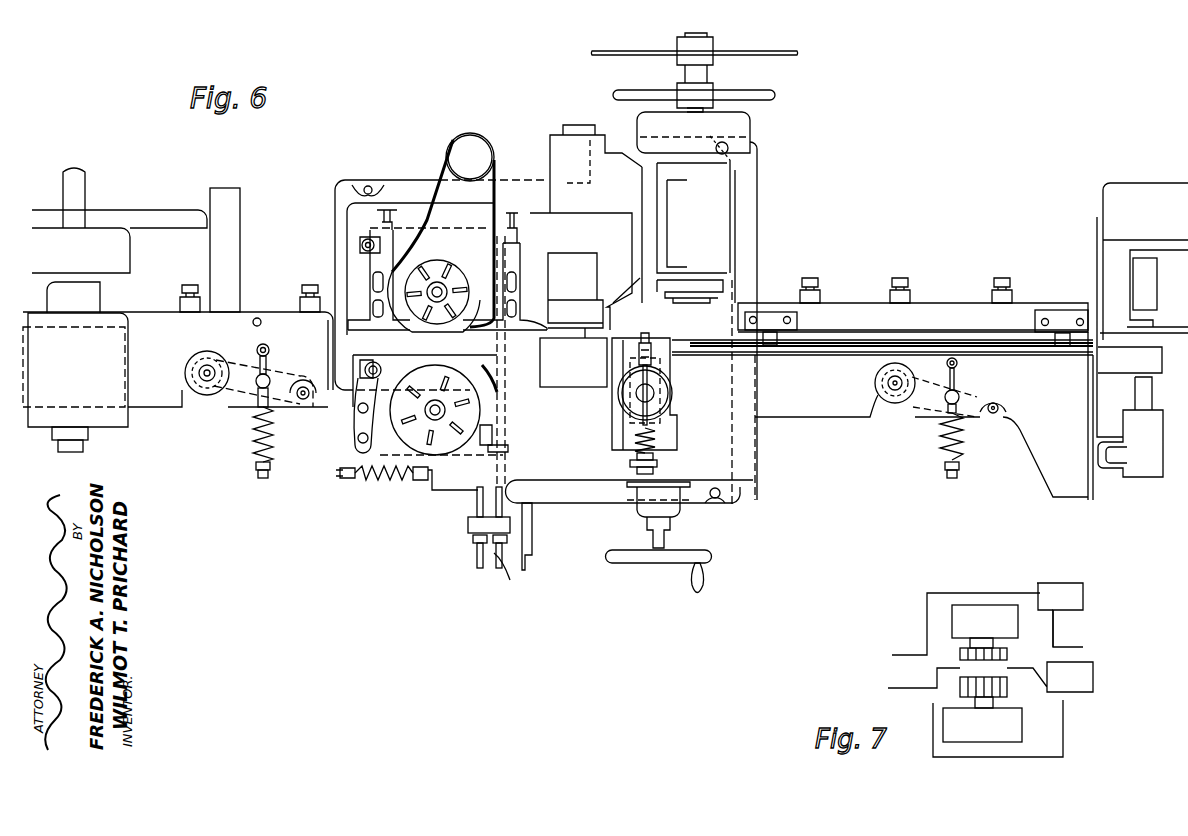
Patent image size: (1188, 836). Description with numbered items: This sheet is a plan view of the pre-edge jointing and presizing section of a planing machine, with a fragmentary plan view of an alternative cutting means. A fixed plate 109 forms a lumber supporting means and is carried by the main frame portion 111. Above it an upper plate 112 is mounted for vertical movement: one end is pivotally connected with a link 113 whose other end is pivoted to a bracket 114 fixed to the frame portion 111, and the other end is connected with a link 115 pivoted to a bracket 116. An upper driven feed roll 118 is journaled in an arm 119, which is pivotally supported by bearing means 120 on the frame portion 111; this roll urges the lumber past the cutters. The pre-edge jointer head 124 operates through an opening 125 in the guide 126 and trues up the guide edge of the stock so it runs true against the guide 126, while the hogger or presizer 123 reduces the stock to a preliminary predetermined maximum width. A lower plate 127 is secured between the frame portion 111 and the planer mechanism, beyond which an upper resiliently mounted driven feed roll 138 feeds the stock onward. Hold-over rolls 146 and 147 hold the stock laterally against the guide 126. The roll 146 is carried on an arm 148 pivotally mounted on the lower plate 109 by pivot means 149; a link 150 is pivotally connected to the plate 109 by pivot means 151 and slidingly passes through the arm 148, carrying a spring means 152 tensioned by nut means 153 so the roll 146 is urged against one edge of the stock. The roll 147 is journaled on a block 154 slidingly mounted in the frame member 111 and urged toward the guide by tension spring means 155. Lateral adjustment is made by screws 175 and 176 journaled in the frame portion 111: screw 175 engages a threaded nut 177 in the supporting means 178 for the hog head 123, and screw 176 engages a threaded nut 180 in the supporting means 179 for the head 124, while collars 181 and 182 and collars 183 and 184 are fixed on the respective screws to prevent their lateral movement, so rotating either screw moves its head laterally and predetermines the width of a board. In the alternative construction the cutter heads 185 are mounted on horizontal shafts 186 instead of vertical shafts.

In FIG. 6, the fixed plate 109 is at (815, 408).
In FIG. 6, the main frame portion 111 is at (615, 433).
In FIG. 6, the upper plate 112 is at (832, 343).
In FIG. 6, the link 113 is at (706, 345).
In FIG. 6, the bracket 114 is at (780, 322).
In FIG. 6, the link 115 is at (1030, 347).
In FIG. 6, the bracket 116 is at (1062, 333).
In FIG. 6, the upper feed driven roll 118 is at (556, 358).
In FIG. 6, the arm 119 is at (560, 153).
In FIG. 6, the bearing means 120 is at (695, 285).
In FIG. 6, the hogger or presizer 123 is at (440, 490).
In FIG. 6, the pre-edge jointer head 124 is at (432, 275).
In FIG. 6, the opening 125 is at (450, 328).
In FIG. 6, the guide 126 is at (381, 324).
In FIG. 6, the lower plate 127 is at (163, 405).
In FIG. 6, the upper resiliently mounted driven feed roll 138 is at (60, 400).
In FIG. 6, the hold-over roll 146 is at (889, 404).
In FIG. 6, the hold-over roll 147 is at (660, 397).
In FIG. 6, the arm 148 is at (975, 408).
In FIG. 6, the pivot means 149 is at (993, 414).
In FIG. 6, the link 150 is at (958, 364).
In FIG. 6, the pivot means 151 is at (949, 364).
In FIG. 6, the spring means 152 is at (943, 452).
In FIG. 6, the nut means 153 is at (960, 474).
In FIG. 6, the block 154 is at (660, 365).
In FIG. 6, the tension spring means 155 is at (665, 440).
In FIG. 6, the screw 175 is at (477, 553).
In FIG. 6, the screw 176 is at (500, 570).
In FIG. 6, the threaded nut 177 is at (490, 431).
In FIG. 6, the supporting means 178 is at (490, 451).
In FIG. 6, the supporting means 179 is at (480, 260).
In FIG. 6, the threaded nut 180 is at (512, 282).
In FIG. 6, the collar 181 is at (470, 538).
In FIG. 6, the collar 182 is at (468, 522).
In FIG. 6, the collar 183 is at (506, 575).
In FIG. 6, the collar 184 is at (517, 520).
In FIG. 7, the cutter head 185 is at (962, 662).
In FIG. 7, the horizontal shaft 186 is at (985, 648).